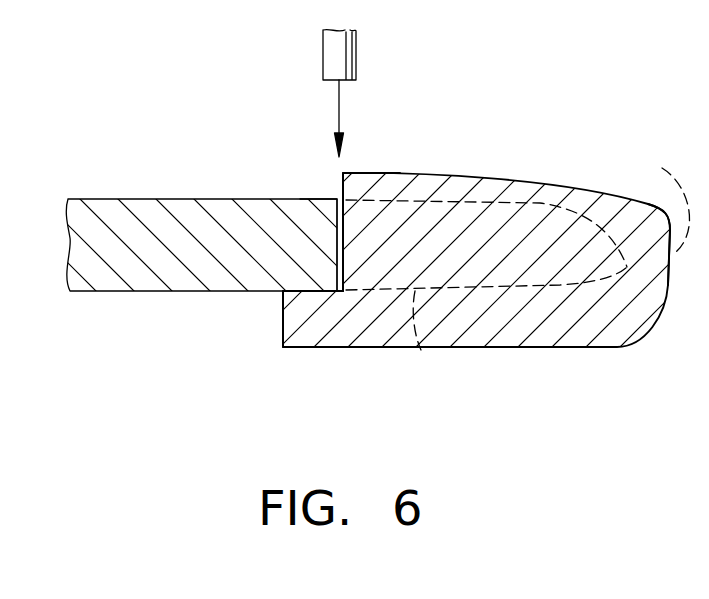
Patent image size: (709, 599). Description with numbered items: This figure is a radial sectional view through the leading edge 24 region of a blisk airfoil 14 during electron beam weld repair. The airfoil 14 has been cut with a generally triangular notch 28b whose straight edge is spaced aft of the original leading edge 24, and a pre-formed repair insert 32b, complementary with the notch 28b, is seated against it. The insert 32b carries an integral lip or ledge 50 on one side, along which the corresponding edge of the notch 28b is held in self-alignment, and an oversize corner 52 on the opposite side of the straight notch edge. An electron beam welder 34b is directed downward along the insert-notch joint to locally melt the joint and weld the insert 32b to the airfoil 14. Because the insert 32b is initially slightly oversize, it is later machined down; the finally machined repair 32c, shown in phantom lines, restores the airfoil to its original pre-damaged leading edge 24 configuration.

The airfoil 14 is at (190, 258).
The leading edge 24 is at (658, 218).
The notch 28b is at (337, 197).
The insert 32b is at (537, 350).
The finally machined repair 32c is at (421, 350).
The electron beam welder 34b is at (340, 57).
The ledge 50 is at (283, 333).
The oversize corner 52 is at (344, 172).